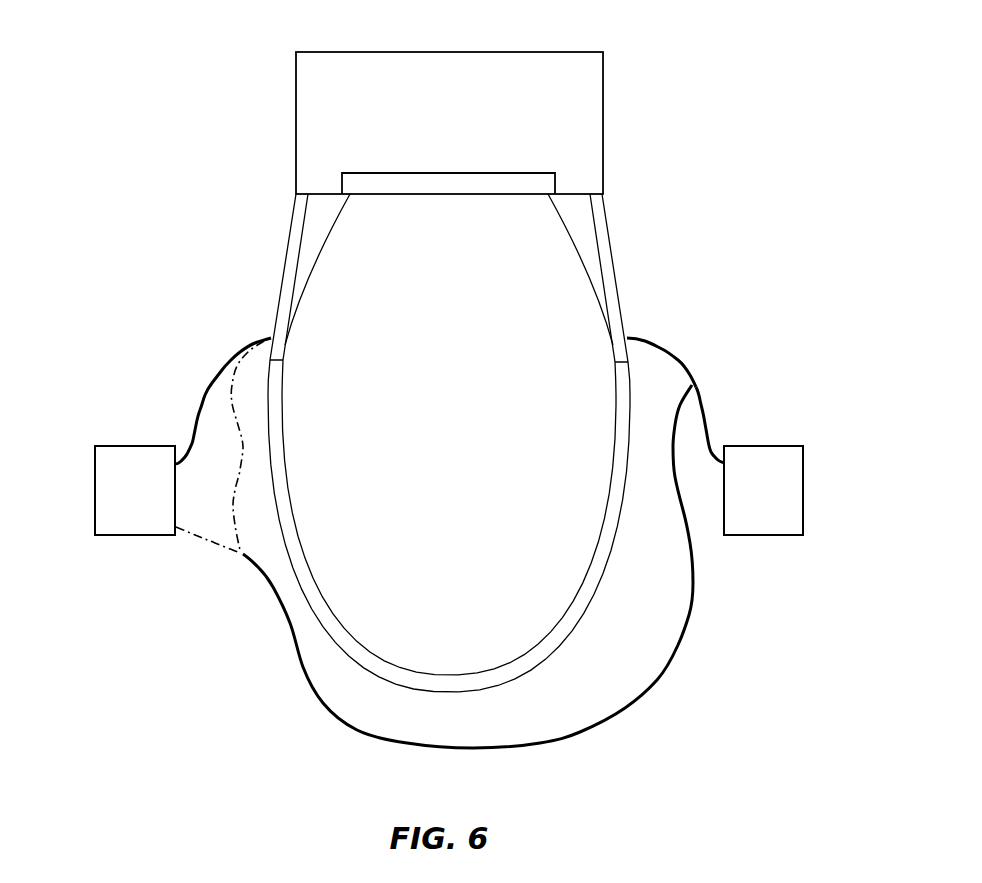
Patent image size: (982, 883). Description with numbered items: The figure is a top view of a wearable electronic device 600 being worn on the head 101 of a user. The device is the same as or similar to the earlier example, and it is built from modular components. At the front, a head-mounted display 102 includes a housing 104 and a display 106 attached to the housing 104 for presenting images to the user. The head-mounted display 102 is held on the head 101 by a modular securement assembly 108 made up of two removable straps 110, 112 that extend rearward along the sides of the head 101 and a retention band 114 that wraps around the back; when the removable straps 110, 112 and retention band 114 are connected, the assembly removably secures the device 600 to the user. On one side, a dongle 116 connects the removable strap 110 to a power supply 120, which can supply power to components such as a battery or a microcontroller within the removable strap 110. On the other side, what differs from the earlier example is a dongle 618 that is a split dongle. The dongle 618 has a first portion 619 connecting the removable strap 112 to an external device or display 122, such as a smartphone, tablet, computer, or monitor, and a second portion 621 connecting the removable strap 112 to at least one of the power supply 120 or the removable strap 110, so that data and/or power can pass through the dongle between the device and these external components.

The wearable electronic device 600 is at (648, 90).
The head-mounted display 102 is at (507, 103).
The housing 104 is at (308, 90).
The display 106 is at (413, 183).
The modular securement assembly 108 is at (268, 310).
The removable strap 110 is at (293, 260).
The removable strap 112 is at (608, 267).
The retention band 114 is at (537, 657).
The head 101 is at (577, 540).
The dongle 116 is at (205, 383).
The dongle 618 is at (685, 367).
The first portion 619 is at (708, 428).
The second portion 621 is at (290, 627).
The power supply 120 is at (95, 490).
The external device or display 122 is at (803, 492).